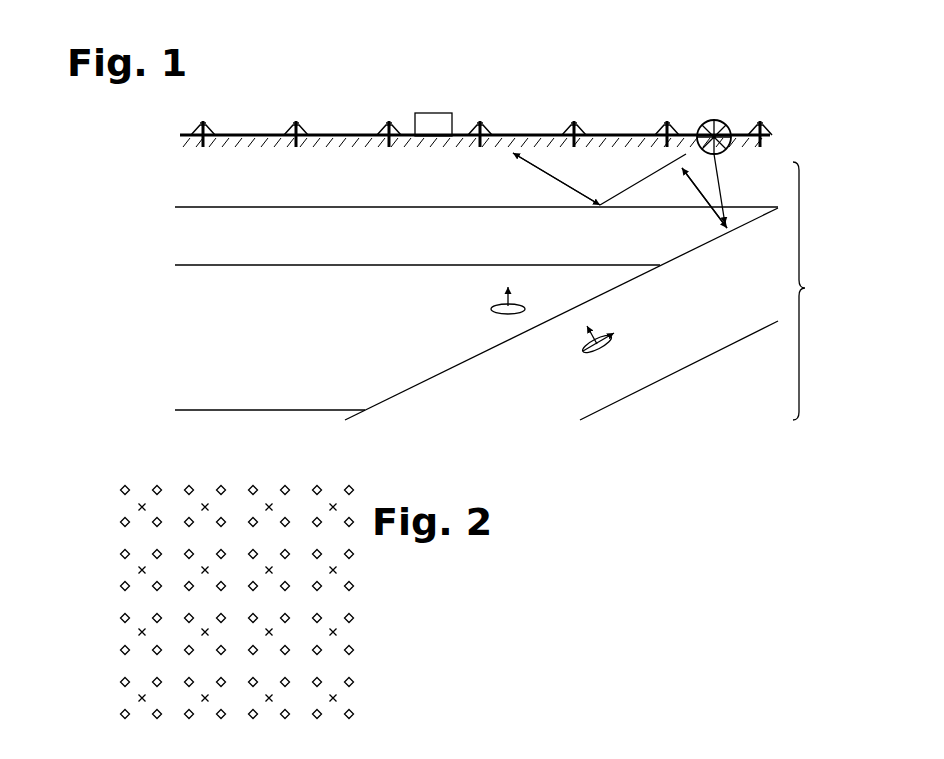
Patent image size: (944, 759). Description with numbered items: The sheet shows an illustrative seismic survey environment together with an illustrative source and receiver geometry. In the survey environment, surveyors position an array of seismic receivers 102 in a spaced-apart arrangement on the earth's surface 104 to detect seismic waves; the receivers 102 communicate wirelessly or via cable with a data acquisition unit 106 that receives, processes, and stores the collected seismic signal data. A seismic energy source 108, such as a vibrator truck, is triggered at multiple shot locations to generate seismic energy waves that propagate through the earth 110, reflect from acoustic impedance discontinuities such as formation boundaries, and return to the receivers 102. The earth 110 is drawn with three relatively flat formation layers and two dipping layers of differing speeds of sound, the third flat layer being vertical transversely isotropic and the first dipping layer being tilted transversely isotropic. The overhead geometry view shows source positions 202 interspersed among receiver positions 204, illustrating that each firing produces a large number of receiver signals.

In FIG. 1, the seismic receivers 102 is at (290, 128).
In FIG. 1, the earth's surface 104 is at (196, 133).
In FIG. 1, the data acquisition unit 106 is at (440, 113).
In FIG. 1, the seismic energy source 108 is at (722, 124).
In FIG. 1, the earth 110 is at (508, 286).
In FIG. 2, the source positions 202 is at (141, 567).
In FIG. 2, the receiver positions 204 is at (154, 589).